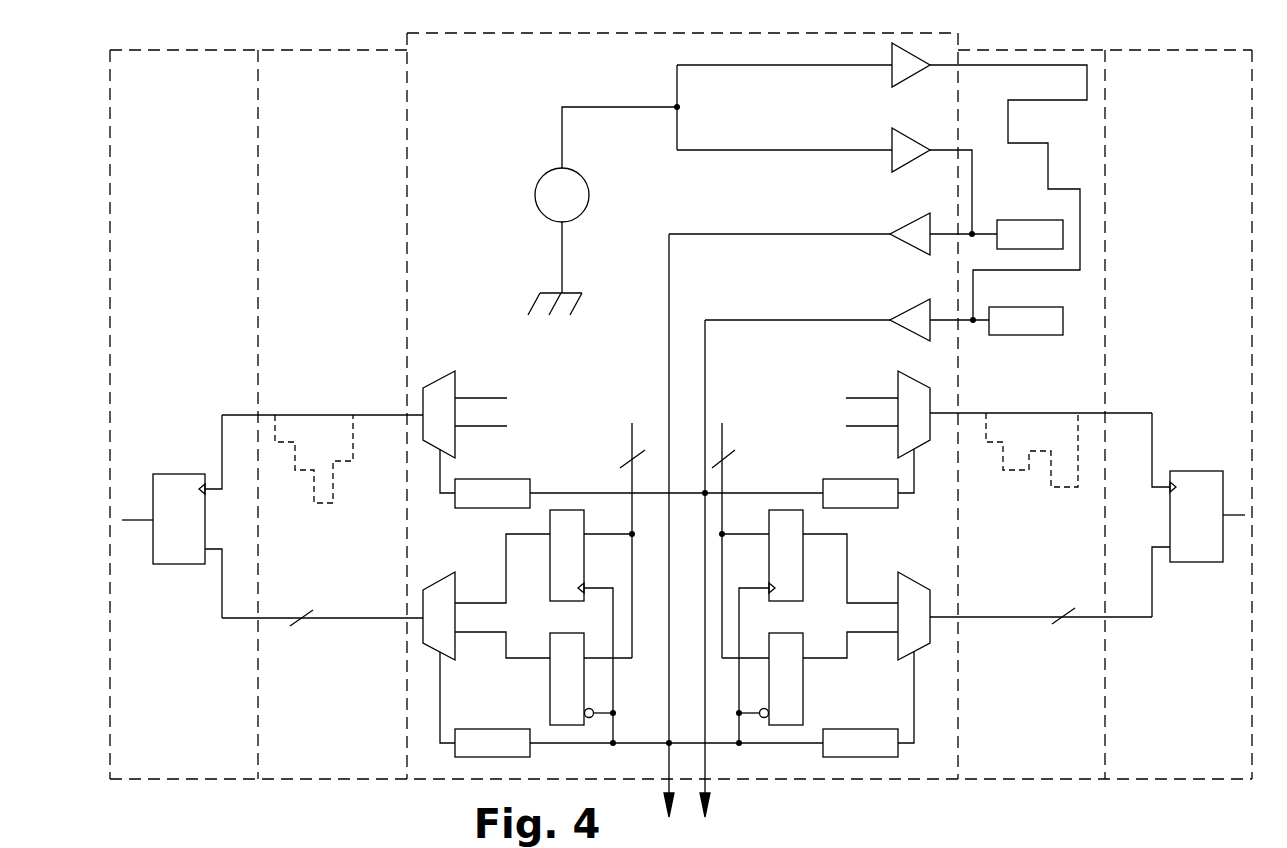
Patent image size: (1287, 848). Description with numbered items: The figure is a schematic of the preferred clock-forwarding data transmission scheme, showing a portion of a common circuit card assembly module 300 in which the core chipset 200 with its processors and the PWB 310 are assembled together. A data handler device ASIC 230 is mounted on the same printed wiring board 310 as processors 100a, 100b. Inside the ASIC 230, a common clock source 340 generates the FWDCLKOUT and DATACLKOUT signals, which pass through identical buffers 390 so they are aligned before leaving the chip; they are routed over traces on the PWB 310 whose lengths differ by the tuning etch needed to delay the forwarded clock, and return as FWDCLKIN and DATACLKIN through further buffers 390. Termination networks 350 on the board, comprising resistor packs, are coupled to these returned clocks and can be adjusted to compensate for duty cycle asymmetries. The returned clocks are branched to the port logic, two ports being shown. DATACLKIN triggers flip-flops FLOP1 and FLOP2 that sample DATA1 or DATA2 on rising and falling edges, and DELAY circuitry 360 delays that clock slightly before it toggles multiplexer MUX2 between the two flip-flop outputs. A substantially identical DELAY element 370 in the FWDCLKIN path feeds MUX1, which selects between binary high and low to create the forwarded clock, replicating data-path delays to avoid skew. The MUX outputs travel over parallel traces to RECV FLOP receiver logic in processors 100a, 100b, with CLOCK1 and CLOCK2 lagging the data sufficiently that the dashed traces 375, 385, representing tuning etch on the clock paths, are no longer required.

The circuit card assembly (CCA) module 300 is at (290, 40).
The processor 100a is at (190, 414).
The processor 100b is at (1185, 583).
The printed wiring board (PWB) 310 is at (687, 414).
The core chipset 200 is at (747, 425).
The data handler device ASIC 230 is at (755, 430).
The common clock source 340 is at (537, 195).
The buffers 390 is at (898, 85).
The termination networks 350 is at (1037, 220).
The DELAY element 370 is at (490, 508).
The DELAY circuitry 360 is at (466, 729).
The dashed trace 375 is at (323, 505).
The dashed trace 385 is at (1063, 487).